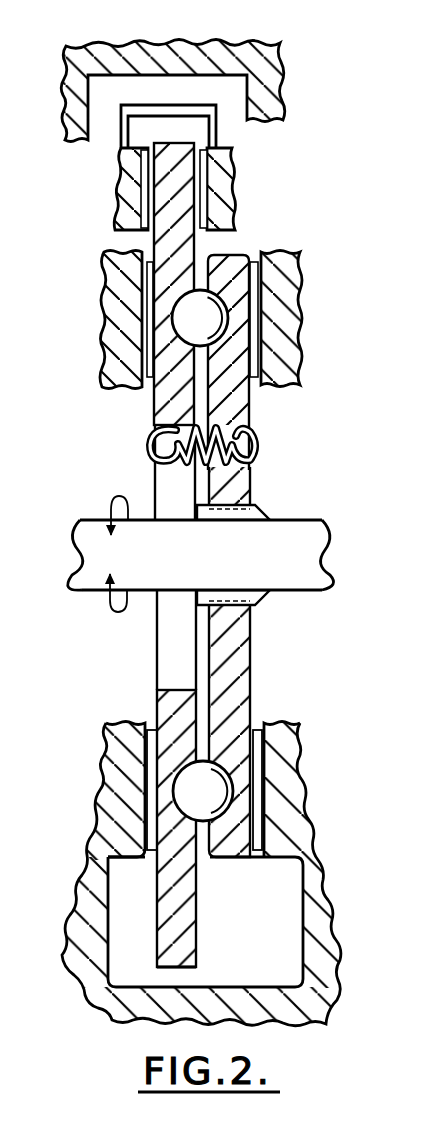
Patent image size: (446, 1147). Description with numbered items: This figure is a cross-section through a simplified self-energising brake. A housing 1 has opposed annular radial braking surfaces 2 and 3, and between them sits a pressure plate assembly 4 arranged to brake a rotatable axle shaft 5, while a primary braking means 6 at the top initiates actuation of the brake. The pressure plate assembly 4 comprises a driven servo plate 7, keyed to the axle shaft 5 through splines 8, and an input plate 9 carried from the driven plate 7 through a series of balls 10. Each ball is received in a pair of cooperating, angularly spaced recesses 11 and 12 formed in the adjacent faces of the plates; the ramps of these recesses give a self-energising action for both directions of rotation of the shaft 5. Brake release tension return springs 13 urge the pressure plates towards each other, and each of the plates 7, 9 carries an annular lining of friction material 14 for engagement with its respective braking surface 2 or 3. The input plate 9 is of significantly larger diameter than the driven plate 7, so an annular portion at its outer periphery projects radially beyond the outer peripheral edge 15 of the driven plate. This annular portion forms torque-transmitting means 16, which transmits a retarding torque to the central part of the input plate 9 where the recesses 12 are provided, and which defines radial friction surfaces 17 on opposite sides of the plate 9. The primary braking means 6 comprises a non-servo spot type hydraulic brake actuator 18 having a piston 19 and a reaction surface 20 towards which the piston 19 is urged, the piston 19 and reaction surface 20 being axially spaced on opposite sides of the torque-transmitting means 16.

The housing 1 is at (328, 888).
The braking surface 2 is at (263, 718).
The braking surface 3 is at (150, 858).
The pressure plate assembly 4 is at (210, 875).
The axle shaft 5 is at (92, 533).
The primary braking means 6 is at (252, 190).
The driven servo plate 7 is at (227, 650).
The splines 8 is at (240, 513).
The input plate 9 is at (167, 699).
The balls 10 is at (206, 326).
The recess 11 is at (222, 287).
The recess 12 is at (155, 378).
The brake release tension return springs 13 is at (150, 458).
The annular lining of friction material 14 is at (147, 765).
The outer peripheral edge 15 is at (222, 267).
The torque-transmitting means 16 is at (146, 946).
The radial friction surfaces 17 is at (160, 913).
The hydraulic brake actuator 18 is at (160, 110).
The piston 19 is at (127, 188).
The reaction surface 20 is at (225, 174).